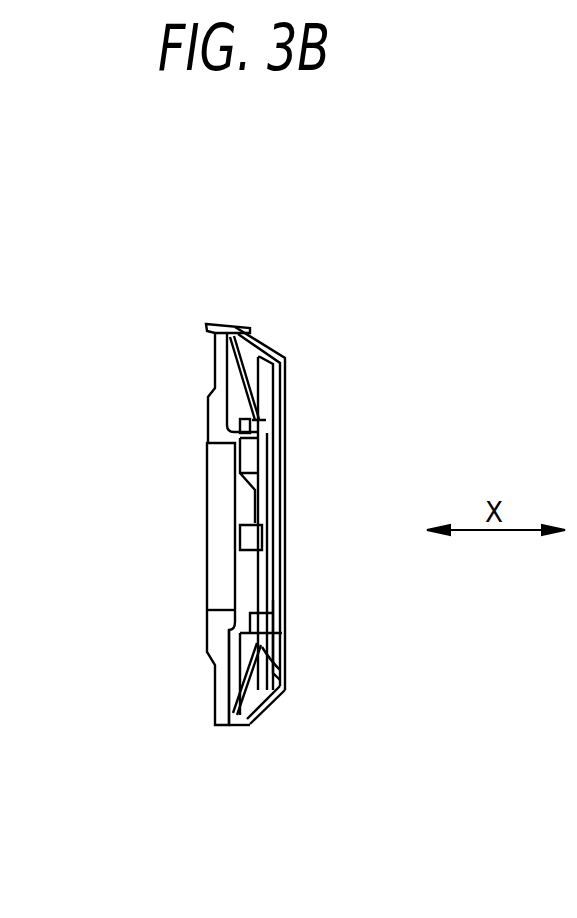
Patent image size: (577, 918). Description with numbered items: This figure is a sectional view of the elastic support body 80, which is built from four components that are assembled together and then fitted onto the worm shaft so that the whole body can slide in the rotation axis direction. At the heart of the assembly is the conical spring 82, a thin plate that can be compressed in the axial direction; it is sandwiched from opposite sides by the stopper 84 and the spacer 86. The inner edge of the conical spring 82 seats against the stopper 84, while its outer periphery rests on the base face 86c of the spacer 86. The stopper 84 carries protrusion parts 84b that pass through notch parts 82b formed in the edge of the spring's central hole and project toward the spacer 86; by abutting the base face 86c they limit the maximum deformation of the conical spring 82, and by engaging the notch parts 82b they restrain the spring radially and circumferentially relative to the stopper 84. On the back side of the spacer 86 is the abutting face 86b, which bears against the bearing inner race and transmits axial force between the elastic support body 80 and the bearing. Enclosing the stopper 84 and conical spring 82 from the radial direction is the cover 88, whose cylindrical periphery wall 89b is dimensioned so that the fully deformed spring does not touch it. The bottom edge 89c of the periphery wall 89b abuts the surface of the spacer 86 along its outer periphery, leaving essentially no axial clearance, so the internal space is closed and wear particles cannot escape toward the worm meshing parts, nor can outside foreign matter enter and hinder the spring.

The elastic support body 80 is at (169, 248).
The conical spring 82 is at (262, 338).
The notch parts 82b is at (287, 623).
The stopper 84 is at (285, 655).
The protrusion parts 84b is at (287, 677).
The spacer 86 is at (210, 693).
The abutting face 86b is at (208, 405).
The base face 86c is at (237, 640).
The cover 88 is at (273, 712).
The periphery wall 89b is at (247, 326).
The bottom edge 89c is at (230, 723).